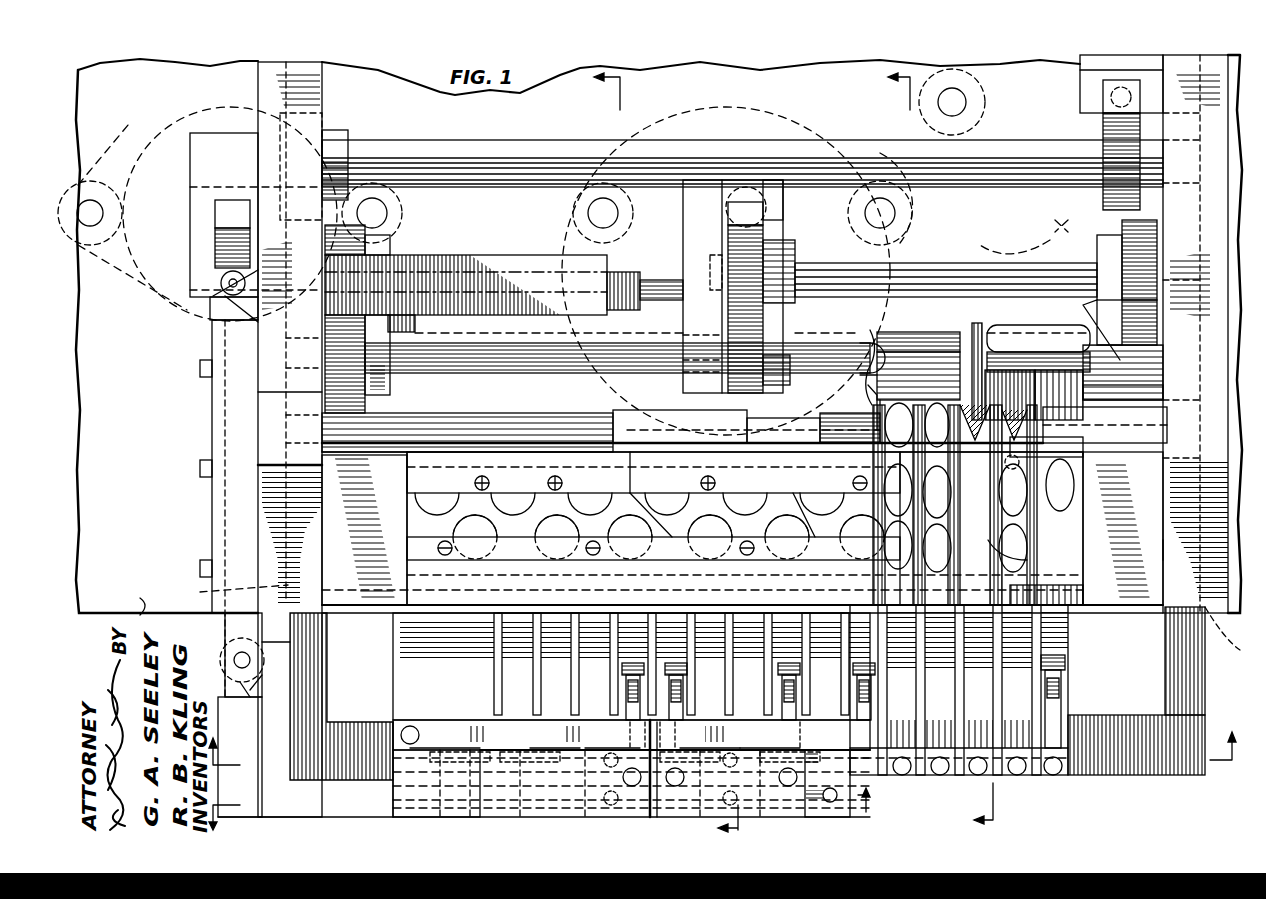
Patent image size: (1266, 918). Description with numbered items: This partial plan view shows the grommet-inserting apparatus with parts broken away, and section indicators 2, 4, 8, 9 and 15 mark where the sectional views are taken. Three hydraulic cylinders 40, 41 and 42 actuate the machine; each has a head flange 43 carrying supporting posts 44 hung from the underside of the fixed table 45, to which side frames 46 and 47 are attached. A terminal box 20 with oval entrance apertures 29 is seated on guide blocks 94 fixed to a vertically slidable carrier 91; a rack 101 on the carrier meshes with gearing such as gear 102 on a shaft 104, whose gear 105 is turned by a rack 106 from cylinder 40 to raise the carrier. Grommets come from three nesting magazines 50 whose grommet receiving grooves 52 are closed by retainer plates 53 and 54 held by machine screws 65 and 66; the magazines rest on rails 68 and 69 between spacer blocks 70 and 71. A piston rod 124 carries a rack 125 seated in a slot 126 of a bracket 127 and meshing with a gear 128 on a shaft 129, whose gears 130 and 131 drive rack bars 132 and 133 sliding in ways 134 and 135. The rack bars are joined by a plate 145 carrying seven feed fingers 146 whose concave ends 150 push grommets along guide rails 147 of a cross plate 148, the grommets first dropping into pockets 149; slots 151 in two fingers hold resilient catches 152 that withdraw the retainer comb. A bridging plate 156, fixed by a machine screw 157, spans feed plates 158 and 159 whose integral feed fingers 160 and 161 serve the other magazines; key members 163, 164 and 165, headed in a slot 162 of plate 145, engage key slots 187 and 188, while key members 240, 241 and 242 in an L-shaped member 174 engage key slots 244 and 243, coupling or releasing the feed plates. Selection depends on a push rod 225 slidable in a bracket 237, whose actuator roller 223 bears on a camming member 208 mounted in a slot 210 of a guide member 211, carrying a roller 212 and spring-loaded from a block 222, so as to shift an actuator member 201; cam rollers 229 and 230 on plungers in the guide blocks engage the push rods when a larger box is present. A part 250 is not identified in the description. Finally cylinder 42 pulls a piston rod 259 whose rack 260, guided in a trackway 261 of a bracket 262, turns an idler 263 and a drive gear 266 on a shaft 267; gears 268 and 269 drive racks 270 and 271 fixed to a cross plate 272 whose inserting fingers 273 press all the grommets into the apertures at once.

The section line 2- 2 is at (929, 449).
The section line 4- 4 is at (655, 453).
The section line 8- 8 is at (719, 737).
The section line 9- 9 is at (536, 816).
The section line 15- 15 is at (1050, 428).
The terminal box 20 is at (920, 368).
The entrance apertures 29 is at (875, 395).
The hydraulic cylinder 40 is at (200, 118).
The hydraulic cylinder 41 is at (1052, 225).
The hydraulic cylinder 42 is at (737, 108).
The head flange 43 is at (120, 152).
The supporting posts 44 is at (93, 198).
The shelf or table 45 is at (152, 615).
The side frame 46 is at (262, 80).
The side frame 47 is at (1172, 550).
The magazine 50 is at (800, 443).
The grommet receiving grooves 52 is at (548, 532).
The retainer plate 53 is at (420, 560).
The retainer plate 54 is at (548, 470).
The machine screw 65 is at (438, 548).
The machine screw 66 is at (482, 476).
The rail 68 is at (1065, 597).
The rail 69 is at (1075, 458).
The spacer block 70 is at (338, 570).
The spacer block 71 is at (1168, 498).
The slidable carrier 91 is at (898, 342).
The guide blocks 94 is at (972, 345).
The rack 101 is at (1125, 330).
The gear 102 is at (372, 245).
The shaft 104 is at (990, 258).
The gear 105 is at (222, 250).
The rack 106 is at (225, 212).
The piston rod 124 is at (1080, 88).
The rack 125 is at (1103, 90).
The slot 126 is at (1105, 103).
The bracket 127 is at (1085, 66).
The gear 128 is at (1115, 150).
The shaft 129 is at (492, 152).
The gear 130 is at (335, 140).
The gear 131 is at (1126, 232).
The rack bar 132 is at (320, 656).
The rack bar 133 is at (1200, 660).
The way 134 is at (231, 592).
The way 135 is at (1227, 628).
The plate 145 is at (1140, 765).
The feed fingers 146 is at (1060, 625).
The guide rails 147 is at (1030, 410).
The cross plate 148 is at (1078, 525).
The pockets 149 is at (1065, 495).
The concave ends 150 is at (1040, 552).
The slots 151 is at (875, 668).
The resilient catches 152 is at (872, 690).
The bridging plate 156 is at (552, 722).
The machine screw 157 is at (410, 726).
The feed plate 158 is at (690, 780).
The feed plate 159 is at (450, 805).
The feed fingers 160 is at (660, 622).
The feed fingers 161 is at (470, 648).
The slot 162 is at (810, 745).
The key member 163 is at (770, 738).
The key member 164 is at (612, 738).
The key member 165 is at (468, 738).
The L-shaped member 174 is at (345, 805).
The key slot 187 is at (710, 738).
The key slot 188 is at (555, 738).
The actuator member 201 is at (252, 695).
The camming member 208 is at (232, 630).
The slot 210 is at (225, 422).
The guide member 211 is at (212, 442).
The roller 212 is at (233, 660).
The block 222 is at (218, 700).
The actuator roller 223 is at (222, 296).
The push rod 225 is at (515, 270).
The cam roller 229 is at (625, 272).
The cam roller 230 is at (416, 323).
The bracket 237 is at (462, 262).
The key member 240 is at (750, 800).
The key member 241 is at (608, 800).
The key member 242 is at (505, 802).
The key slot 243 is at (540, 800).
The key slot 244 is at (792, 800).
The cover plate 250 is at (975, 330).
The piston rod 259 is at (768, 200).
The rack 260 is at (768, 214).
The trackway 261 is at (726, 205).
The bracket 262 is at (732, 218).
The idler 263 is at (755, 268).
The drive gear 266 is at (770, 343).
The shaft 267 is at (858, 343).
The gear 268 is at (342, 348).
The gear 269 is at (1110, 378).
The rack 270 is at (375, 404).
The rack 271 is at (1125, 393).
The cross plate 272 is at (507, 402).
The inserting fingers 273 is at (1020, 425).